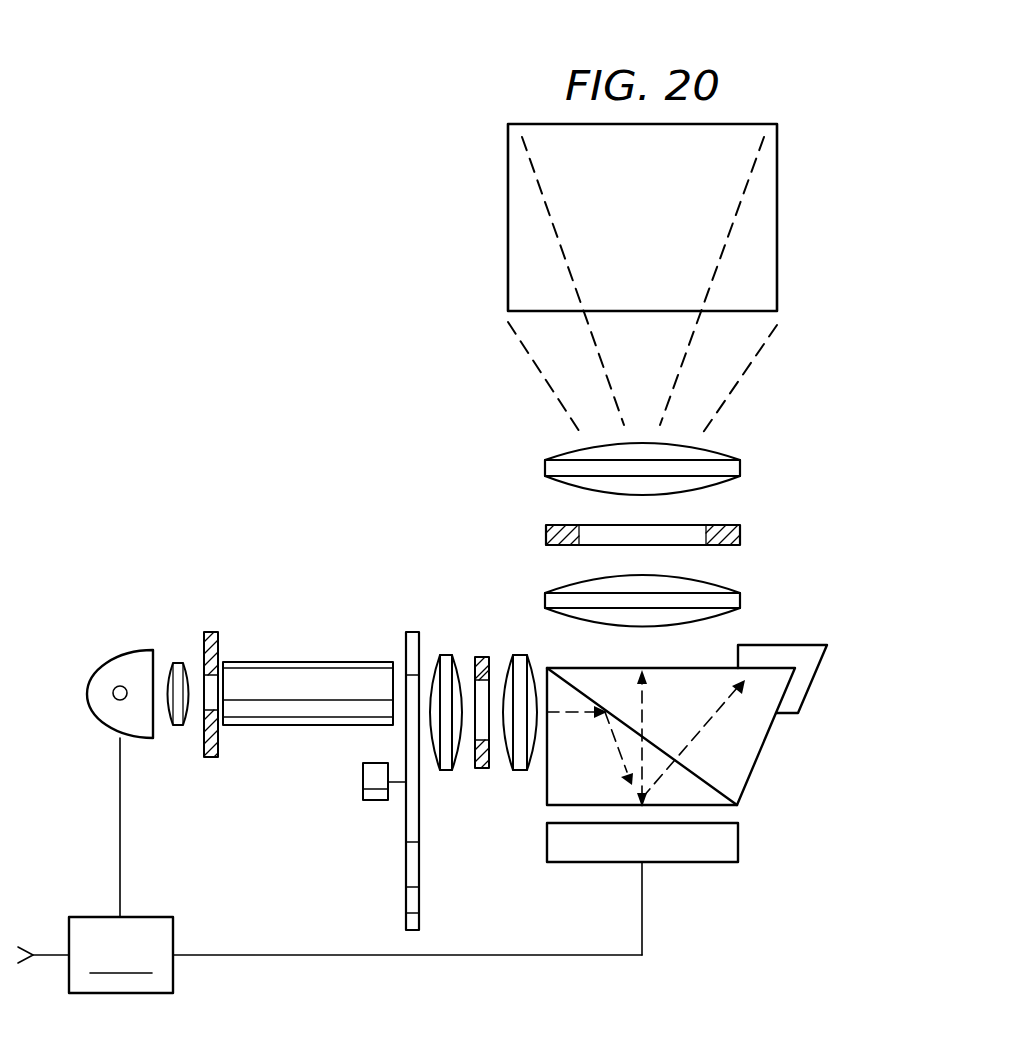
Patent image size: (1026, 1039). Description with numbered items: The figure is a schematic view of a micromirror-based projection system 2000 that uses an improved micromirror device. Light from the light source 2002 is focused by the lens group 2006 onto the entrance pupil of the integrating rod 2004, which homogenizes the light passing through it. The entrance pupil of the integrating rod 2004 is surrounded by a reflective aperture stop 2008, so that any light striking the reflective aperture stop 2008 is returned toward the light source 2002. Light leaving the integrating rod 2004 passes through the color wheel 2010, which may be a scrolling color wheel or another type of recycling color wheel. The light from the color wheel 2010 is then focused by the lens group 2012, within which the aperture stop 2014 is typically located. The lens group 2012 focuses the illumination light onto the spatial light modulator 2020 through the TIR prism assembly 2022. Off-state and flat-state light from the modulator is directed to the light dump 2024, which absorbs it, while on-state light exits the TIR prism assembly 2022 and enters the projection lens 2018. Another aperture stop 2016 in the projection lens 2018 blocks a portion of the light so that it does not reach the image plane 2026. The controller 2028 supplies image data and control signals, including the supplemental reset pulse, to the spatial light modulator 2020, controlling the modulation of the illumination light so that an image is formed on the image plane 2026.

The micromirror-based projection system 2000 is at (232, 312).
The light source 2002 is at (115, 657).
The integrating rod 2004 is at (297, 662).
The lens group 2006 is at (177, 725).
The reflective aperture stop 2008 is at (212, 632).
The color wheel 2010 is at (405, 872).
The lens group 2012 is at (535, 646).
The aperture stop 2014 is at (483, 768).
The aperture stop 2016 is at (546, 534).
The projection lens 2018 is at (805, 437).
The spatial light modulator 2020 is at (738, 842).
The TIR prism assembly 2022 is at (758, 767).
The light dump 2024 is at (812, 685).
The image plane 2026 is at (777, 217).
The controller 2028 is at (330, 865).